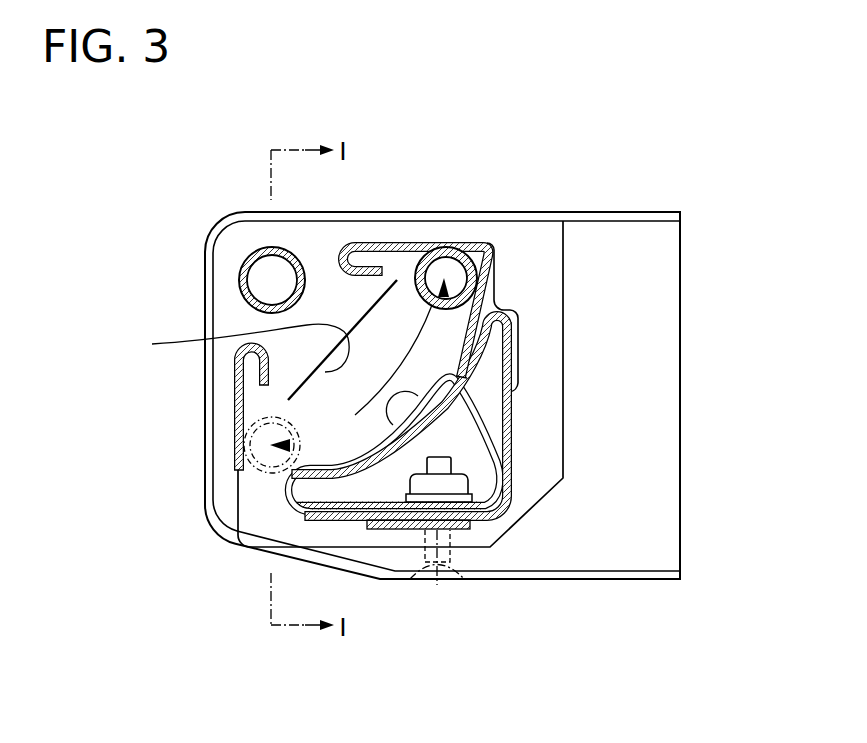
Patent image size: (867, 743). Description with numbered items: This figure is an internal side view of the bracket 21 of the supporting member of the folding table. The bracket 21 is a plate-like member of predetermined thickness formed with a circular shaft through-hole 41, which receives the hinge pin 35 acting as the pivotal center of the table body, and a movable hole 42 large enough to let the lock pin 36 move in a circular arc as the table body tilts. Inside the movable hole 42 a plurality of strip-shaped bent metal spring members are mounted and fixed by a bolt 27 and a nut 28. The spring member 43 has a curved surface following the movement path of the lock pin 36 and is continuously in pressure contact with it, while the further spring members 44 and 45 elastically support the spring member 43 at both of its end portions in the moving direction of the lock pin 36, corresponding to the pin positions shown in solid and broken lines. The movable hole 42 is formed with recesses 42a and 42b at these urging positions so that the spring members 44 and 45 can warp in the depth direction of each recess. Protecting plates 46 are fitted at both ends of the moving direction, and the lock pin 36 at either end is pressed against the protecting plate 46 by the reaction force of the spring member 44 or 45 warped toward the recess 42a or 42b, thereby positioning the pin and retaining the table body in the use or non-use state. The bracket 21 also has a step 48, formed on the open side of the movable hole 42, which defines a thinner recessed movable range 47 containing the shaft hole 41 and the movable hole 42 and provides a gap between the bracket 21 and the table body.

The bracket 21 is at (644, 187).
The bolt 27 is at (440, 588).
The nut 28 is at (497, 523).
The hinge pin 35 is at (208, 268).
The lock pin 36 is at (415, 242).
The shaft through-hole 41 is at (272, 302).
The movable hole 42 is at (444, 450).
The recess 42a is at (306, 505).
The recess 42b is at (520, 317).
The spring member 43 is at (526, 418).
The spring member 44 is at (268, 489).
The spring member 45 is at (518, 417).
The protecting plate 46 is at (340, 264).
The movable range 47 is at (515, 240).
The step 48 is at (562, 450).